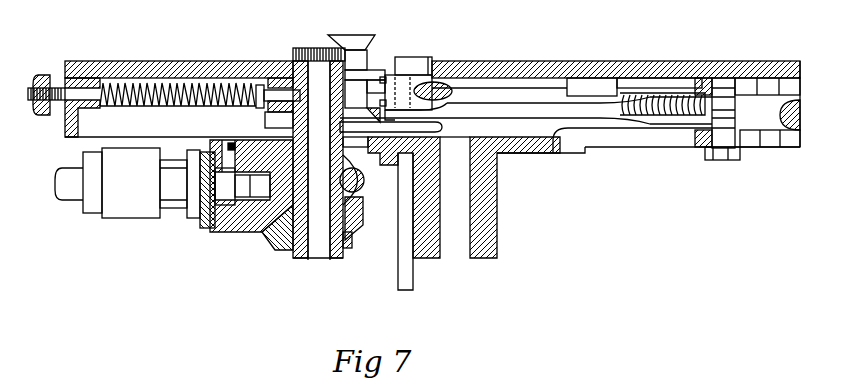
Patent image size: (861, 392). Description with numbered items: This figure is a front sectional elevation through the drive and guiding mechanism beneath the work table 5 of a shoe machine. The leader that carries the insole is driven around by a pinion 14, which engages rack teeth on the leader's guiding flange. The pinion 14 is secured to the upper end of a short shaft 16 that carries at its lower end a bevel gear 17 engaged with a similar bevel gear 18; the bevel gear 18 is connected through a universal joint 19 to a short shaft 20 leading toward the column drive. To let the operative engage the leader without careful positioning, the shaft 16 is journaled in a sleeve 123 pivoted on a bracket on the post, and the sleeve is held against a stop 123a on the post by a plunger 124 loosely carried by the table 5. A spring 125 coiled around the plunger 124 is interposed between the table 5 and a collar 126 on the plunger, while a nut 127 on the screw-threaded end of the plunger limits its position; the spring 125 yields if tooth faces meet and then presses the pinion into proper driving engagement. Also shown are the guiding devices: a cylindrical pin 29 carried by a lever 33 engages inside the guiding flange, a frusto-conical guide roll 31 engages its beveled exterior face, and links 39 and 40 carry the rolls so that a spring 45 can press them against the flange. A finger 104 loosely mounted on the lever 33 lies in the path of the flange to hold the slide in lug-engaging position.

The table 5 is at (625, 72).
The pinion 14 is at (320, 50).
The short shaft 16 is at (316, 256).
The bevel gear 17 is at (282, 236).
The bevel gear 18 is at (256, 228).
The universal joint 19 is at (177, 218).
The short shaft 20 is at (60, 204).
The cylindrical pin 29 is at (426, 62).
The guide roll 31 is at (358, 40).
The lever 33 is at (450, 82).
The link 39 is at (700, 122).
The link 40 is at (642, 128).
The spring 45 is at (665, 100).
The finger 104 is at (388, 78).
The sleeve 123 is at (297, 70).
The stop 123a is at (350, 152).
The plunger 124 is at (282, 82).
The spring 125 is at (170, 84).
The collar 126 is at (262, 78).
The nut 127 is at (42, 74).